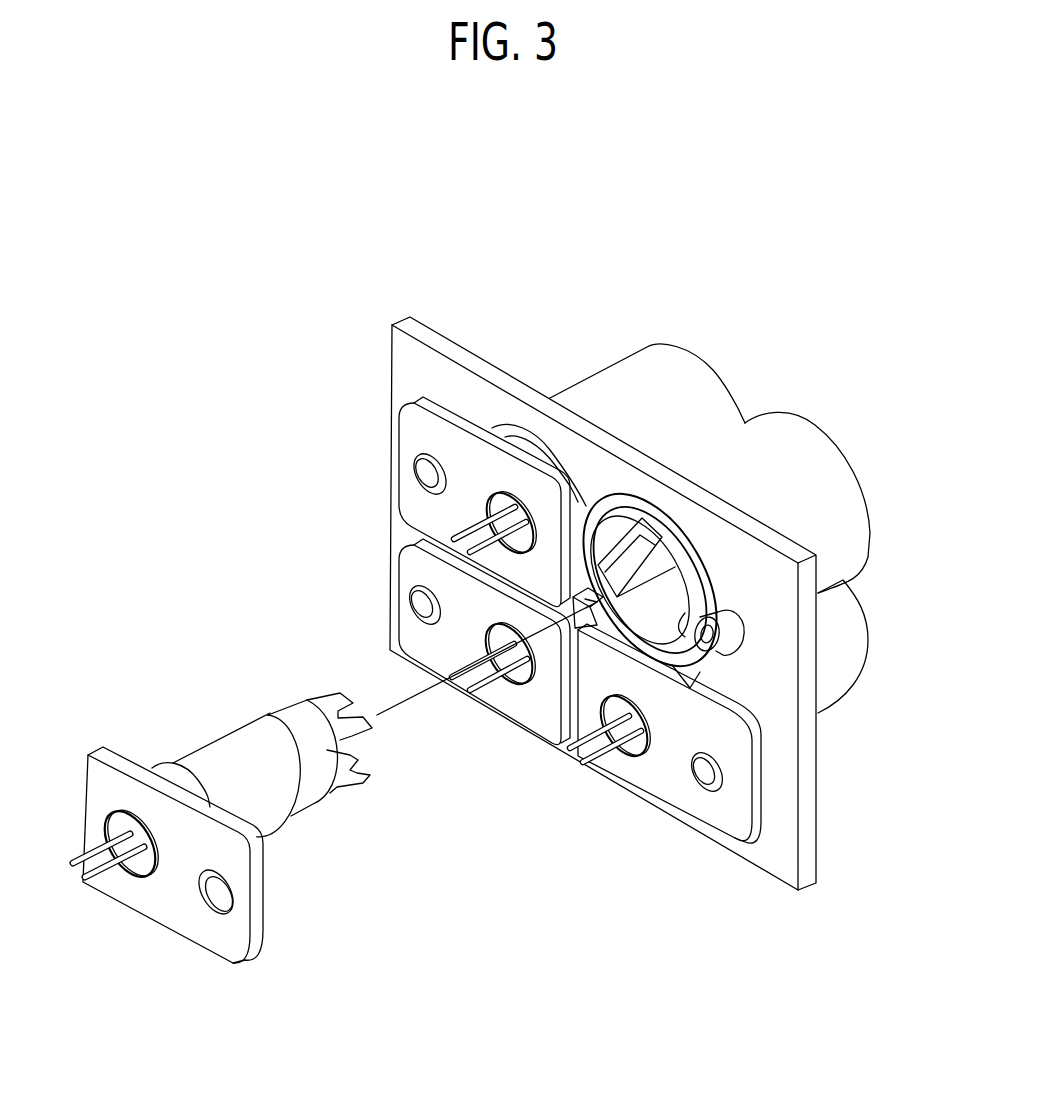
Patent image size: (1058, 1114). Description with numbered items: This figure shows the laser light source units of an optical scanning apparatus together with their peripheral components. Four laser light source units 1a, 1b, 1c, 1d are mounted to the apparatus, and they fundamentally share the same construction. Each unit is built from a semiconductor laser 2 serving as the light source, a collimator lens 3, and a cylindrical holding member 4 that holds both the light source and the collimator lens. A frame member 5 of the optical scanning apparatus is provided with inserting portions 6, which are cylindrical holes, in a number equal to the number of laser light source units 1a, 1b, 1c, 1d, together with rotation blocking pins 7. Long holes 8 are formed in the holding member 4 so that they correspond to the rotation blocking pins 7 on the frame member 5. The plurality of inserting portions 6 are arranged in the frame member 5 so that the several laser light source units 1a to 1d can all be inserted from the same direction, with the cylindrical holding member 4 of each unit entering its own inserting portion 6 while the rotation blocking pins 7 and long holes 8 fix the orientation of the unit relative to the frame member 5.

The laser light source unit 1a is at (250, 829).
The laser light source unit 1b is at (663, 786).
The laser light source unit 1c is at (406, 447).
The laser light source unit 1d is at (406, 587).
The semiconductor laser 2 is at (128, 875).
The collimator lens 3 is at (367, 757).
The holding member 4 is at (230, 745).
The frame member 5 is at (423, 367).
The inserting portion 6 is at (658, 590).
The rotation blocking pin 7 is at (410, 478).
The long hole 8 is at (212, 892).